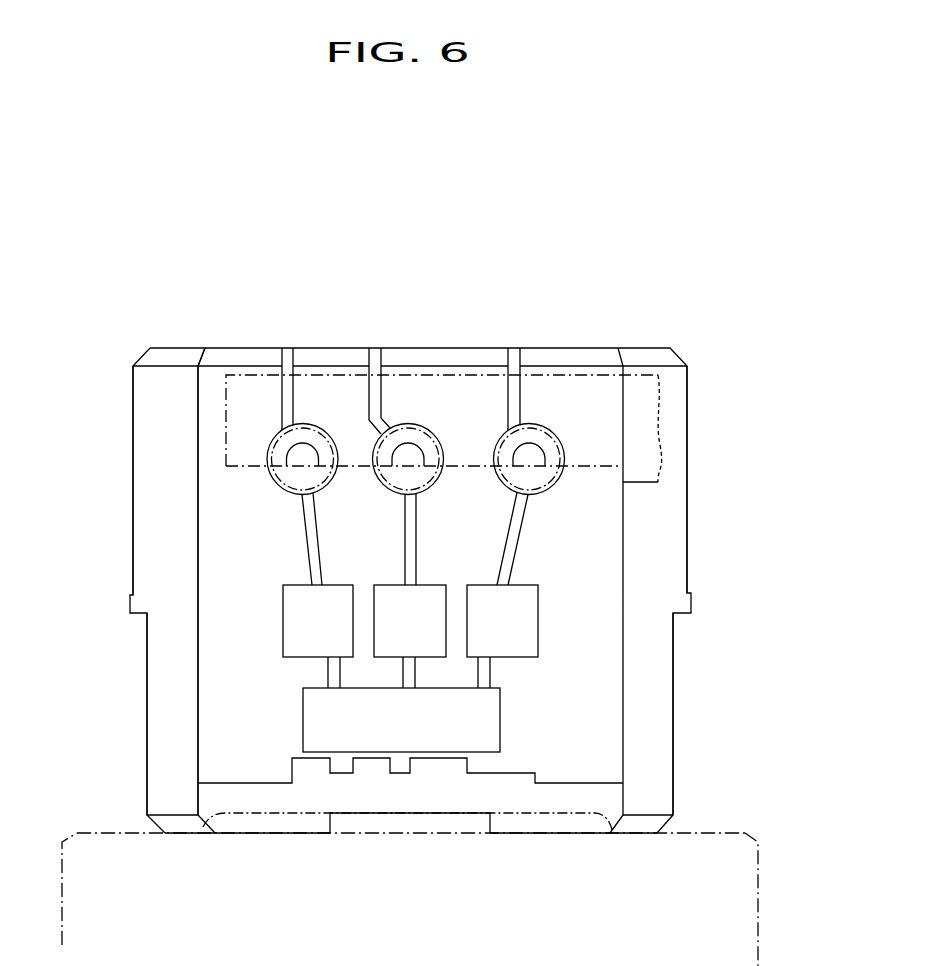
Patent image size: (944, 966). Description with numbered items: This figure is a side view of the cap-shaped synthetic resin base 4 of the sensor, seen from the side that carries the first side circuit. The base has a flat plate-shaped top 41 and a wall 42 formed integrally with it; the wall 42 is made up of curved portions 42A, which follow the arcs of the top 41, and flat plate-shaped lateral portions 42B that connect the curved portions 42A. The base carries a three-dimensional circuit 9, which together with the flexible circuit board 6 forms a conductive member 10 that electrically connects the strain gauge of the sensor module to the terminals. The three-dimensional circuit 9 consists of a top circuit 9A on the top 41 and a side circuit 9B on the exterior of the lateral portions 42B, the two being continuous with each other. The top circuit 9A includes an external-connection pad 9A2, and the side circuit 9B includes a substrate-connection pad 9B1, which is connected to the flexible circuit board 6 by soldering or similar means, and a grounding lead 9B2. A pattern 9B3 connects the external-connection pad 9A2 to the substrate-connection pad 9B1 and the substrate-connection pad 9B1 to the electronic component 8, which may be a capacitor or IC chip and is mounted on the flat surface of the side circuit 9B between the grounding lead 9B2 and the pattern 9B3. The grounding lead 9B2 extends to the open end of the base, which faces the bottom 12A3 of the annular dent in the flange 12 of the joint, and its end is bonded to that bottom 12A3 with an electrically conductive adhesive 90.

The synthetic resin base 4 is at (655, 277).
The conductive member 10 is at (695, 342).
The wall 42 is at (208, 548).
The curved portions 42A is at (138, 477).
The lateral portions 42B is at (208, 698).
The top 41 is at (212, 358).
The flexible circuit board 6 is at (660, 382).
The electrically conductive adhesive 90 is at (553, 812).
The three-dimensional circuit 9 is at (527, 322).
The top circuit 9A is at (240, 348).
The external-connection pad 9A2 is at (290, 348).
The side circuit 9B is at (290, 545).
The substrate-connection pad 9B1 is at (317, 480).
The grounding lead 9B2 is at (517, 780).
The pattern 9B3 is at (295, 385).
The electronic component 8 is at (293, 618).
The flange 12 is at (760, 865).
The bottom 12A3 is at (723, 832).